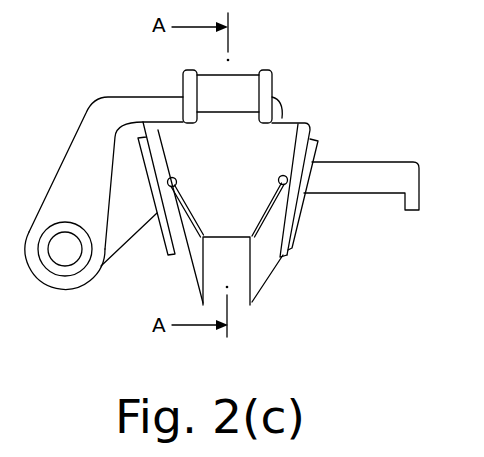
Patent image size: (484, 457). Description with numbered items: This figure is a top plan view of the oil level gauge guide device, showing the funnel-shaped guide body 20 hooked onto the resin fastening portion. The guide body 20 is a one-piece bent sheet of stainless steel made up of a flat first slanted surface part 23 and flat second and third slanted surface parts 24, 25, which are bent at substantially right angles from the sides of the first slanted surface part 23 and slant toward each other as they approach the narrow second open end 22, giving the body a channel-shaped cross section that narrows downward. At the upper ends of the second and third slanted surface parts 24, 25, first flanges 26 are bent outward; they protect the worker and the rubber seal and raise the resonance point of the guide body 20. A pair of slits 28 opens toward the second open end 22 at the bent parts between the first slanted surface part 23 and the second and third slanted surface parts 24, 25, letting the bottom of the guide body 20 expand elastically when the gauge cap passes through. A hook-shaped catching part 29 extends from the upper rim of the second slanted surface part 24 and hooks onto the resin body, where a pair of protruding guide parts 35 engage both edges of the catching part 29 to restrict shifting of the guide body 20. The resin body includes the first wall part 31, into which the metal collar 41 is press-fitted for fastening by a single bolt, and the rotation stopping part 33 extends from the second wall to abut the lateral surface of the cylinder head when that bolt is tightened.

The guide body 20 is at (244, 239).
The second open end 22 is at (230, 272).
The first slanted surface part 23 is at (272, 159).
The second slanted surface part 24 is at (191, 260).
The third slanted surface part 25 is at (284, 247).
The first flange 26 is at (160, 231).
The slit 28 is at (266, 212).
The catching part 29 is at (244, 73).
The first wall part 31 is at (77, 160).
The rotation stopping part 33 is at (374, 172).
The protruding guide part 35 is at (184, 88).
The metal collar 41 is at (63, 273).